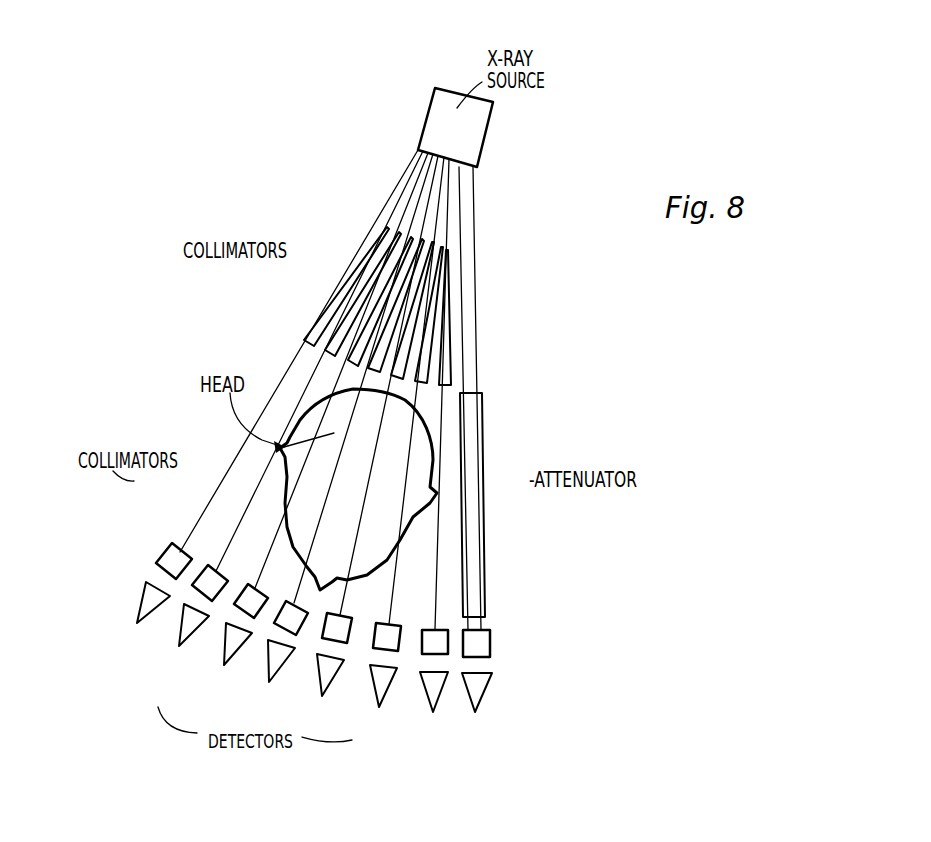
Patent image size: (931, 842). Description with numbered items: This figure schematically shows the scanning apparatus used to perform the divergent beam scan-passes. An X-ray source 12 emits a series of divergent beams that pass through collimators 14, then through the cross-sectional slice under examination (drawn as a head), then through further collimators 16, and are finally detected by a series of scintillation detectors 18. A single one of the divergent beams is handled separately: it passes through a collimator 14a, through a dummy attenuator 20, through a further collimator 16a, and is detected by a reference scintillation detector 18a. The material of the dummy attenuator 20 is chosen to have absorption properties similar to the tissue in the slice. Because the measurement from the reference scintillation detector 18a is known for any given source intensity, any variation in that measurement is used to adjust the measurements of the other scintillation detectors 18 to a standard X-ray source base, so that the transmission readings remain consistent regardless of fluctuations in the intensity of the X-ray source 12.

The X-ray source 12 is at (468, 129).
The collimators 14 is at (342, 307).
The collimator 14a is at (465, 318).
The further collimators 16 is at (291, 610).
The further collimator 16a is at (490, 638).
The scintillation detectors 18 is at (267, 667).
The reference scintillation detector 18a is at (477, 687).
The dummy attenuator 20 is at (470, 478).